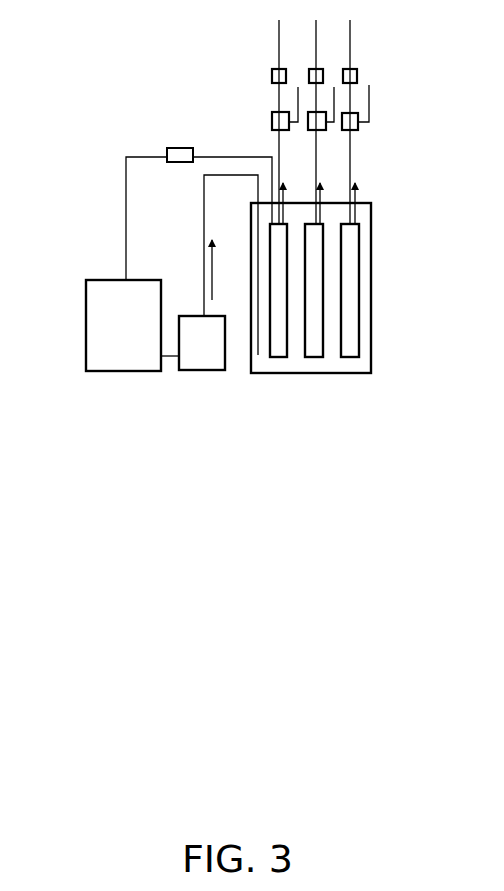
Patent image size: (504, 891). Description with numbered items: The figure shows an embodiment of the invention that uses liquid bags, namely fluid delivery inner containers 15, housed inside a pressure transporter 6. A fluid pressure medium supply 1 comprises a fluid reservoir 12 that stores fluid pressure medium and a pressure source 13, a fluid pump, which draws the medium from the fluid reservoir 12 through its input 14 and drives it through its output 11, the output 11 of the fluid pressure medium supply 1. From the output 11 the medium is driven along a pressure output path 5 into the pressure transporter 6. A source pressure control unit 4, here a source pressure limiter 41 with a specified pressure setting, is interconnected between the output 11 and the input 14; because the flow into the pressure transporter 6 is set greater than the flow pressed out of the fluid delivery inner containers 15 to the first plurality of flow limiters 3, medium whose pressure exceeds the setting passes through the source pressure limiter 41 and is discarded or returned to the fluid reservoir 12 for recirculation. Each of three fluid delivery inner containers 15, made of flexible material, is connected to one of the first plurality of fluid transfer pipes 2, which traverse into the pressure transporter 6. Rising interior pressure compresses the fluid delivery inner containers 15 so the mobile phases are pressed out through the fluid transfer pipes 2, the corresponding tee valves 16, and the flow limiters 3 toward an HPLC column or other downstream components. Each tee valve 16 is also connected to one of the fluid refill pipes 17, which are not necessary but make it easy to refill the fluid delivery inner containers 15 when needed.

The fluid pressure medium supply 1 is at (129, 365).
The first plurality of fluid transfer pipes 2 is at (280, 170).
The first plurality of flow limiters 3 is at (272, 76).
The source pressure control unit 4 is at (199, 176).
The pressure output path 5 is at (214, 270).
The pressure transporter 6 is at (371, 290).
The output 11 is at (204, 243).
The fluid reservoir 12 is at (86, 330).
The pressure source 13 is at (207, 371).
The input 14 is at (166, 357).
The fluid delivery inner containers 15 is at (359, 337).
The tee valves 16 is at (272, 124).
The fluid refill pipes 17 is at (369, 105).
The source pressure limiter 41 is at (178, 162).